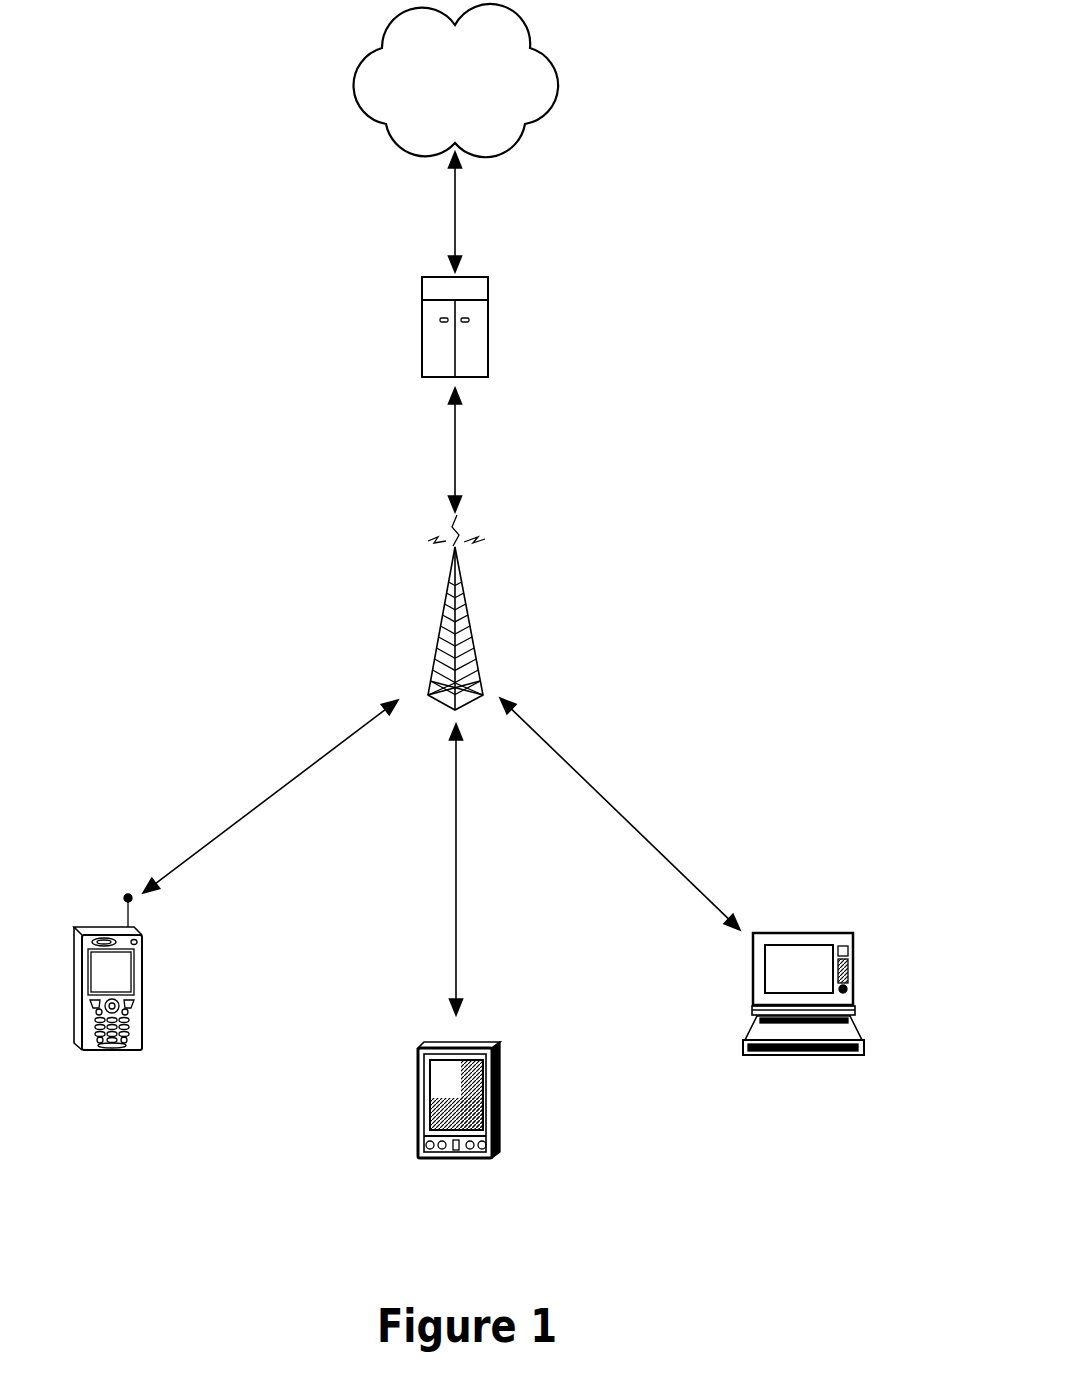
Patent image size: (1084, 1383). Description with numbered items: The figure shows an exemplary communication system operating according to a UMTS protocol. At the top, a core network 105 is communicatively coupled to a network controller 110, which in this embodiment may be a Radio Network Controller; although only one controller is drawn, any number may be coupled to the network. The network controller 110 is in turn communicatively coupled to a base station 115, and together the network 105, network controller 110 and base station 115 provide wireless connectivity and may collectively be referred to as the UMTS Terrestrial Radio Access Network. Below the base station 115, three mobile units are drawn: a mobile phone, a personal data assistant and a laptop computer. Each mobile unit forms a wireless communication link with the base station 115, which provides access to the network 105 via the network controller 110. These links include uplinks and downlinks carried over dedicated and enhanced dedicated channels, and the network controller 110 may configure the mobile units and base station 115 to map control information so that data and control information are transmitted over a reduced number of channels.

The network 105 is at (477, 123).
The network controller 110 is at (489, 348).
The base station 115 is at (473, 636).